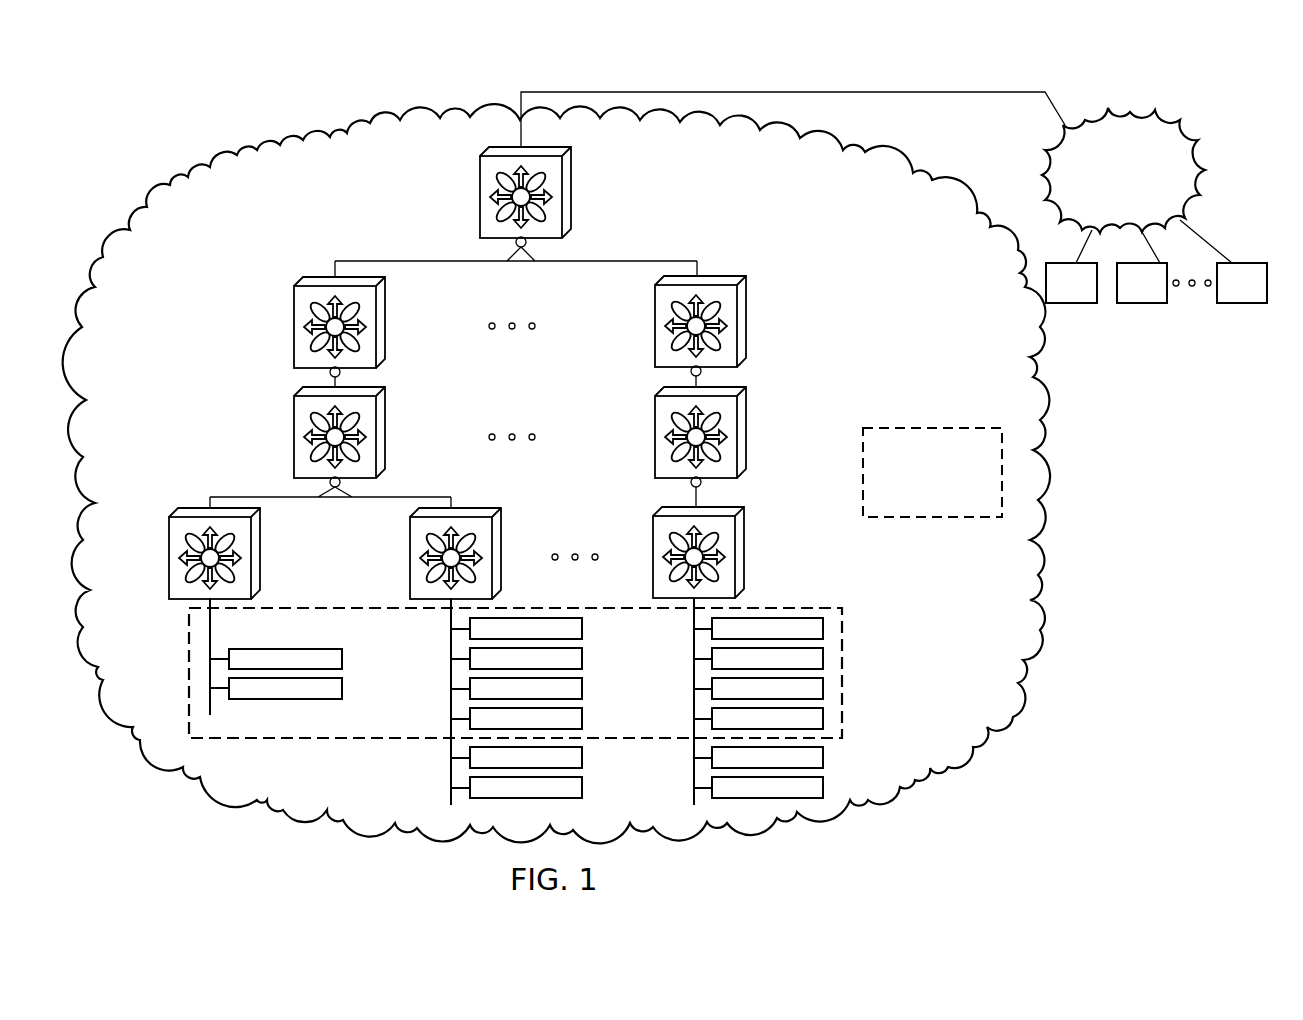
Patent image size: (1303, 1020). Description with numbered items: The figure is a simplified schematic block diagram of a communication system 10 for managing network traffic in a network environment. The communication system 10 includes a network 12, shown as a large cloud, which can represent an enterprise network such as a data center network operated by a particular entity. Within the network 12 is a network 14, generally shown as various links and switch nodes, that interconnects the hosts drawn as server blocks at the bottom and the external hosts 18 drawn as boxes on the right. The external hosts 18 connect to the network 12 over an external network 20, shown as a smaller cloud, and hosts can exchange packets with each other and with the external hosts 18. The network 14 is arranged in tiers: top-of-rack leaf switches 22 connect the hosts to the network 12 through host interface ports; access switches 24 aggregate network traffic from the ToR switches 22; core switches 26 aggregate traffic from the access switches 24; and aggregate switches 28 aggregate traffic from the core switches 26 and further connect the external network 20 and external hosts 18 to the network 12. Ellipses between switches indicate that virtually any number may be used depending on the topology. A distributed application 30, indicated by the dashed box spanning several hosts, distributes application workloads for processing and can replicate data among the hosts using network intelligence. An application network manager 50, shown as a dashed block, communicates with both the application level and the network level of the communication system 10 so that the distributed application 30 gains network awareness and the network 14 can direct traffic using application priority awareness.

The communication system 10 is at (172, 120).
The network 12 is at (1046, 478).
The network 14 is at (897, 347).
The external hosts 18 is at (1150, 276).
The external network 20 is at (1122, 108).
The ToR switches 22 is at (468, 538).
The access switches 24 is at (523, 438).
The core switches 26 is at (520, 323).
The aggregate switches 28 is at (468, 181).
The distributed application 30 is at (515, 702).
The application network manager 50 is at (945, 428).